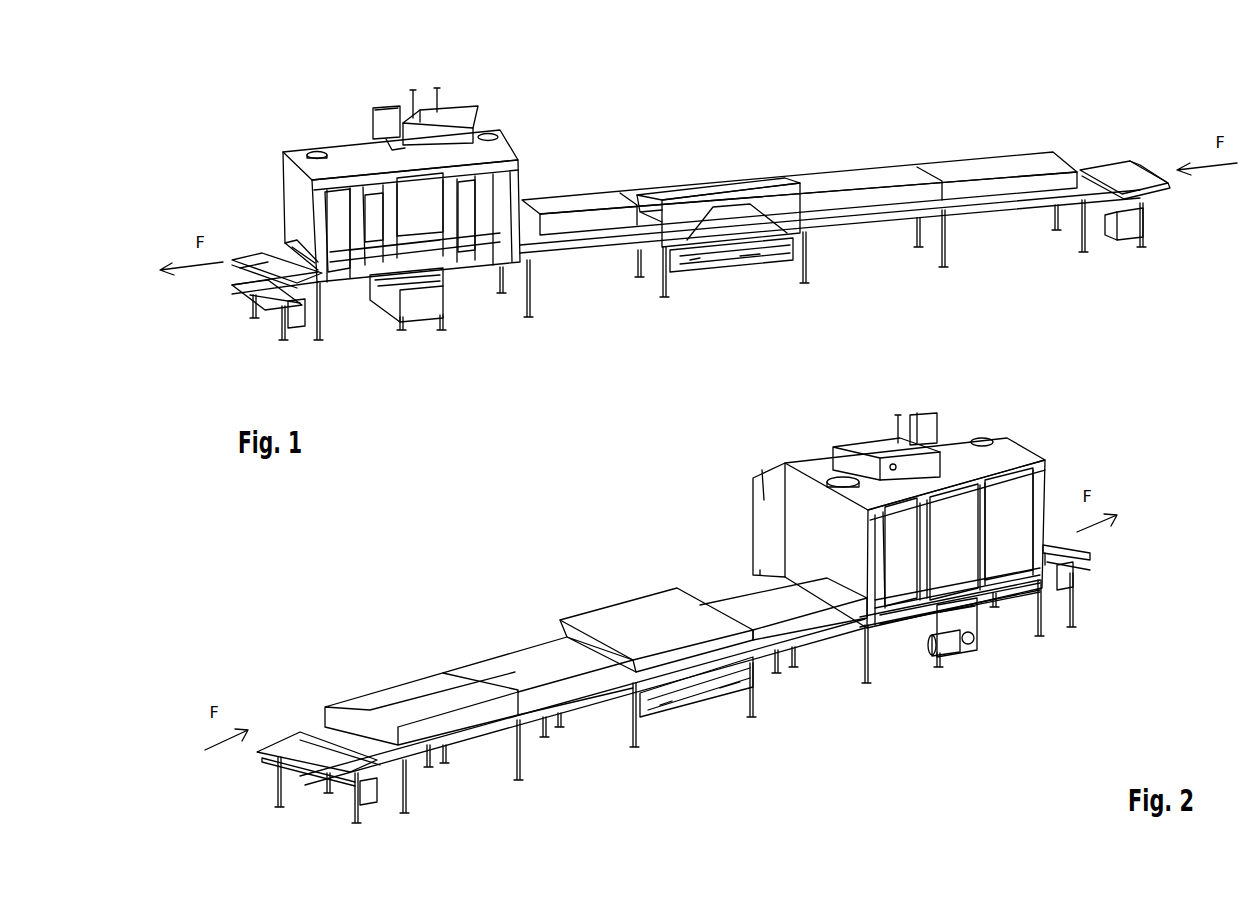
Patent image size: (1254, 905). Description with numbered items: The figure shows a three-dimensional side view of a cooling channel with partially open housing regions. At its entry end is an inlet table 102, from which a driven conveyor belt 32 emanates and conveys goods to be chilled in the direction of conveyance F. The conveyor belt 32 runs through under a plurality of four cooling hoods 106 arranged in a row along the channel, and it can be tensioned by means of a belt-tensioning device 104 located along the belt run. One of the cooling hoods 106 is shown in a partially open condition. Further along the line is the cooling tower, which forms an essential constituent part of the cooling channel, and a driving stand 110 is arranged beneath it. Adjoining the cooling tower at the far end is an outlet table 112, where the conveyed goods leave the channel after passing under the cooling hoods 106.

In FIG. 1, the conveyor belt 32 is at (240, 287).
In FIG. 2, the conveyor belt 32 is at (318, 780).
In FIG. 1, the inlet table 102 is at (1103, 173).
In FIG. 2, the inlet table 102 is at (307, 740).
In FIG. 1, the belt-tensioning device 104 is at (753, 257).
In FIG. 2, the belt-tensioning device 104 is at (713, 688).
In FIG. 1, the cooling hoods 106 is at (583, 220).
In FIG. 2, the cooling hoods 106 is at (415, 688).
In FIG. 1, the driving stand 110 is at (420, 307).
In FIG. 2, the driving stand 110 is at (967, 657).
In FIG. 1, the outlet table 112 is at (255, 251).
In FIG. 2, the outlet table 112 is at (1087, 560).